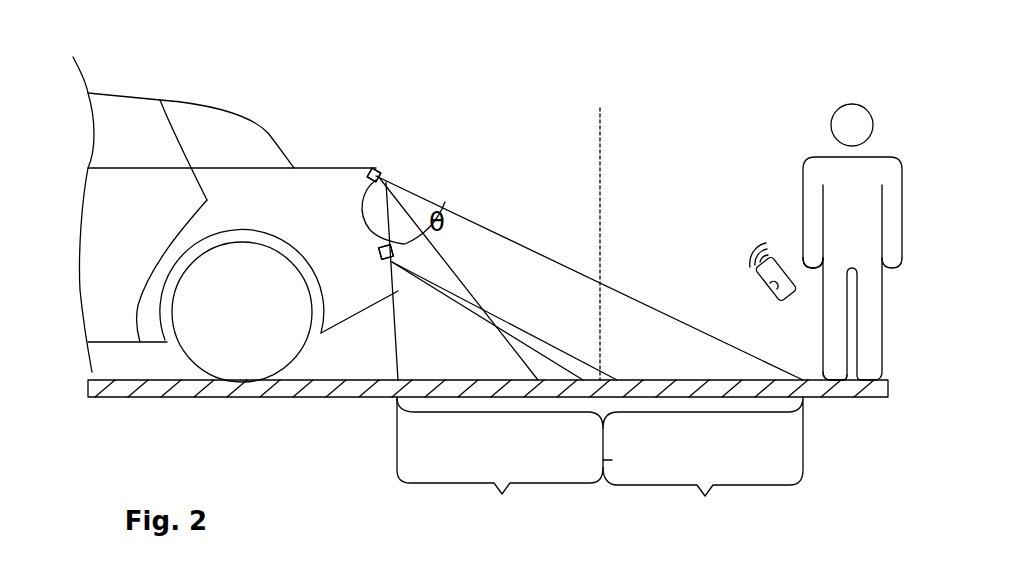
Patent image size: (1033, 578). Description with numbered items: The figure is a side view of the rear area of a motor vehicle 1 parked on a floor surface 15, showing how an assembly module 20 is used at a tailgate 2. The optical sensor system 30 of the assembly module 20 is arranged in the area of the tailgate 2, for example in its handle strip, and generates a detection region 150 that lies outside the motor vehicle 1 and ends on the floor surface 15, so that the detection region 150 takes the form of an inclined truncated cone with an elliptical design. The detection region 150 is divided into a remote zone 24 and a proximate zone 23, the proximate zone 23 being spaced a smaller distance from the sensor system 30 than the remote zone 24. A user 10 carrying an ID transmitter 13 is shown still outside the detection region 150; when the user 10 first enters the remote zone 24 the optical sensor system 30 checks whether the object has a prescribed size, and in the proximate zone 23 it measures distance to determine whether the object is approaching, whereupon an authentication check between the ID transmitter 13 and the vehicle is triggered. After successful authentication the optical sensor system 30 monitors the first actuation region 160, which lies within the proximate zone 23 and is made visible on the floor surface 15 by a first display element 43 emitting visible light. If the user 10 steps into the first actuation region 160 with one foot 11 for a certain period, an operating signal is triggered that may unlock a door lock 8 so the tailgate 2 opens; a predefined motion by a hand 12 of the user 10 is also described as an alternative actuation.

The motor vehicle 1 is at (203, 86).
The tailgate 2 is at (328, 167).
The door lock 8 is at (384, 262).
The user 10 is at (845, 88).
The foot 11 is at (827, 375).
The hand 12 is at (808, 246).
The ID transmitter 13 is at (772, 290).
The floor surface 15 is at (842, 398).
The assembly module 20 is at (422, 100).
The proximate zone 23 is at (504, 467).
The remote zone 24 is at (703, 466).
The optical sensor system 30 is at (380, 170).
The first display element 43 is at (397, 242).
The detection region 150 is at (632, 322).
The first actuation region 160 is at (593, 380).